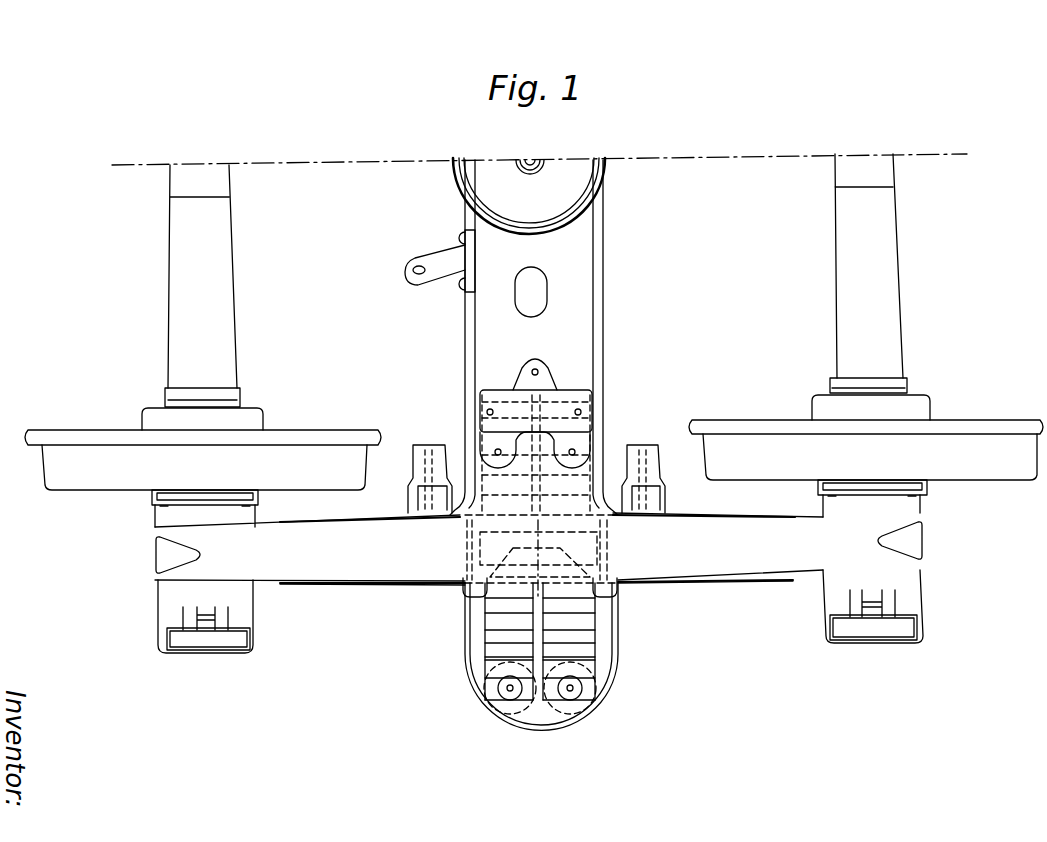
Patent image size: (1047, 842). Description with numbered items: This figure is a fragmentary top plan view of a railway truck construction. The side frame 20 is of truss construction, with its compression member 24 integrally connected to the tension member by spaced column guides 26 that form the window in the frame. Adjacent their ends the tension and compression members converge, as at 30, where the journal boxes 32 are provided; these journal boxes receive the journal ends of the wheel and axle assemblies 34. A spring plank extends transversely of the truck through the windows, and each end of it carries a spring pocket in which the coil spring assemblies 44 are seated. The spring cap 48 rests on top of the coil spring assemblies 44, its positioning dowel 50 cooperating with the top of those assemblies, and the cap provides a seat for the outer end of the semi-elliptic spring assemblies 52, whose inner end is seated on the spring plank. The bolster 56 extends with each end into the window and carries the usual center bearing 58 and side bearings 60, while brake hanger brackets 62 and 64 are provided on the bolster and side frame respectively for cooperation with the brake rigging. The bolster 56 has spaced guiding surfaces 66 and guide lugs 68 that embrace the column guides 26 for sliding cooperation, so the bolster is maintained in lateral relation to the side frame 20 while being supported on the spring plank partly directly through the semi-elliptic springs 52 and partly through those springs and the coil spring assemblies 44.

The side frame 20 is at (489, 555).
The compression member 24 is at (333, 528).
The column guides 26 is at (600, 540).
The converging ends 30 is at (539, 547).
The journal boxes 32 is at (166, 607).
The wheel and axle assemblies 34 is at (90, 441).
The coil spring assemblies 44 is at (523, 713).
The spring cap 48 is at (571, 710).
The positioning dowel 50 is at (600, 688).
The semi-elliptic spring assemblies 52 is at (567, 647).
The bolster 56 is at (578, 280).
The center bearing 58 is at (570, 188).
The side bearings 60 is at (575, 401).
The brake hanger bracket 62 is at (415, 285).
The brake hanger brackets 64 is at (657, 427).
The guiding surfaces 66 is at (600, 560).
The guide lugs 68 is at (470, 591).